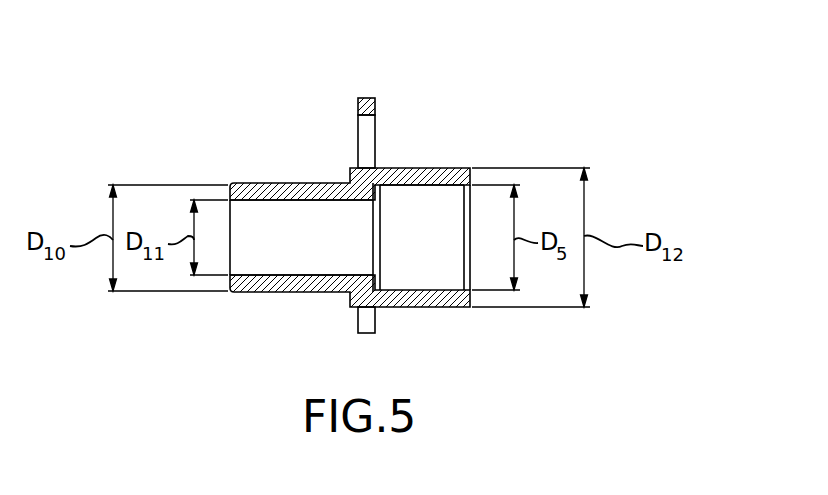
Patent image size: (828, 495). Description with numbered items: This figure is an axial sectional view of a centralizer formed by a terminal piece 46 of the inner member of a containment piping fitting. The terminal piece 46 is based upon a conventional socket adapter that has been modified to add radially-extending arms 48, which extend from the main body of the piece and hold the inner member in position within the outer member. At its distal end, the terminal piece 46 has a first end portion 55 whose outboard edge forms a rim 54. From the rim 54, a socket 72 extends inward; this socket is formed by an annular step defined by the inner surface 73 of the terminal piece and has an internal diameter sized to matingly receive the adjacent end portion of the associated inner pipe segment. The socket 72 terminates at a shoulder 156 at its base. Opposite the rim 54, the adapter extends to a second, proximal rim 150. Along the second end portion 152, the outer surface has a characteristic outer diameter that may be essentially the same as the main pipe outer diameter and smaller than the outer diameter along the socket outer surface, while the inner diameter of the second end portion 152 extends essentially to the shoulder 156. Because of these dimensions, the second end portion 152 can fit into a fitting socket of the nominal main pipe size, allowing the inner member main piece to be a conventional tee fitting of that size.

The terminal piece 46 is at (318, 118).
The radially-extending arms 48 is at (387, 132).
The rim 54 is at (473, 305).
The first end portion 55 is at (394, 312).
The socket 72 is at (421, 200).
The inner surface 73 is at (300, 200).
The second rim 150 is at (232, 250).
The second end portion 152 is at (265, 297).
The shoulder 156 is at (378, 278).